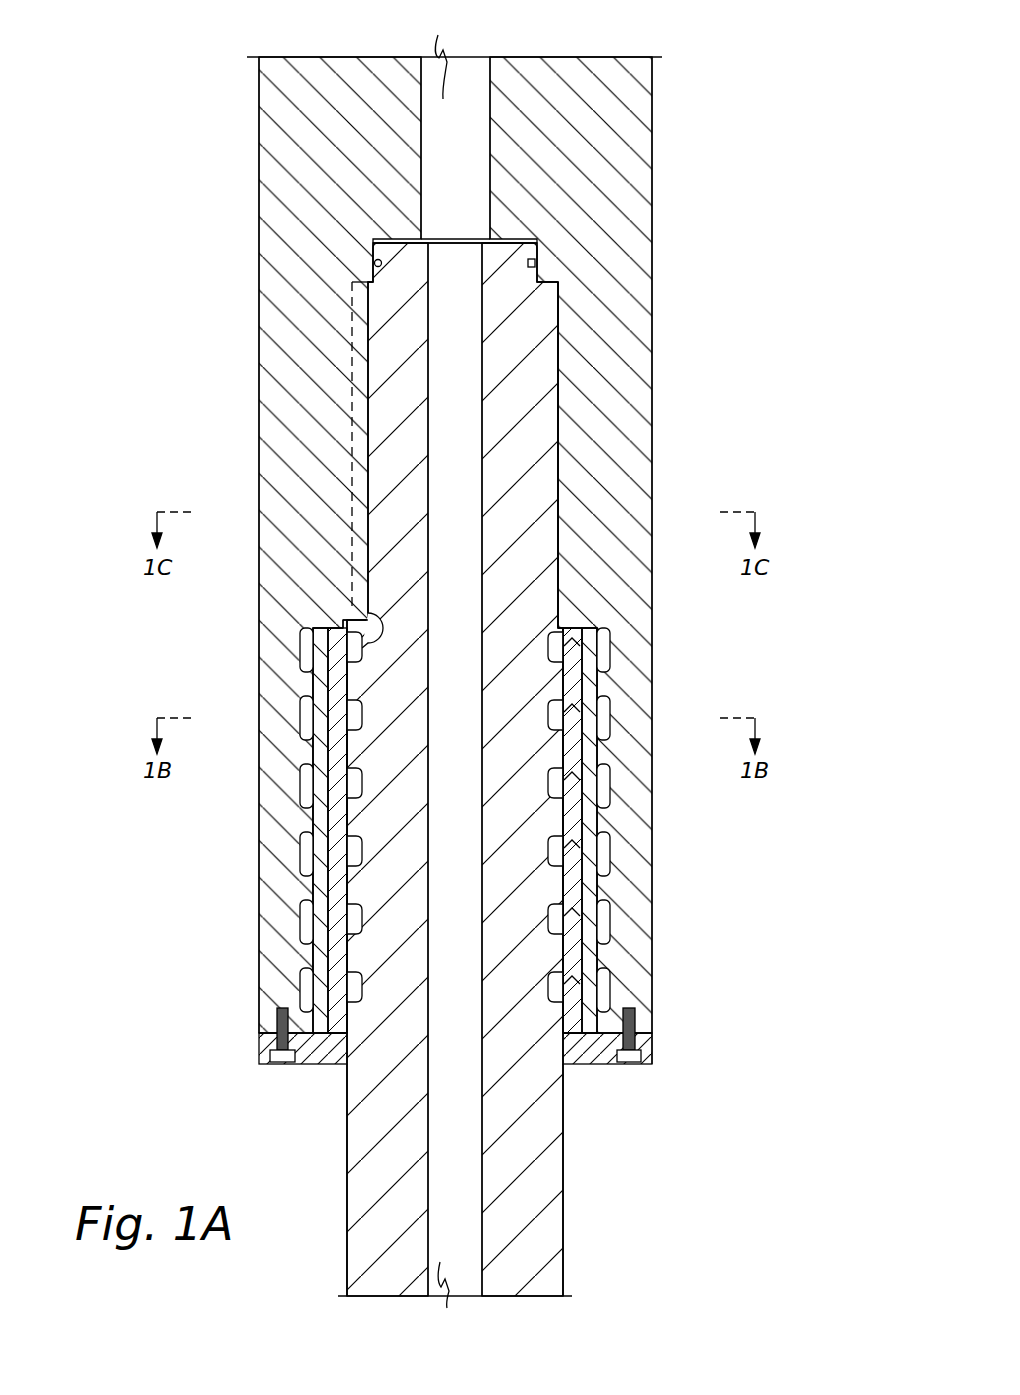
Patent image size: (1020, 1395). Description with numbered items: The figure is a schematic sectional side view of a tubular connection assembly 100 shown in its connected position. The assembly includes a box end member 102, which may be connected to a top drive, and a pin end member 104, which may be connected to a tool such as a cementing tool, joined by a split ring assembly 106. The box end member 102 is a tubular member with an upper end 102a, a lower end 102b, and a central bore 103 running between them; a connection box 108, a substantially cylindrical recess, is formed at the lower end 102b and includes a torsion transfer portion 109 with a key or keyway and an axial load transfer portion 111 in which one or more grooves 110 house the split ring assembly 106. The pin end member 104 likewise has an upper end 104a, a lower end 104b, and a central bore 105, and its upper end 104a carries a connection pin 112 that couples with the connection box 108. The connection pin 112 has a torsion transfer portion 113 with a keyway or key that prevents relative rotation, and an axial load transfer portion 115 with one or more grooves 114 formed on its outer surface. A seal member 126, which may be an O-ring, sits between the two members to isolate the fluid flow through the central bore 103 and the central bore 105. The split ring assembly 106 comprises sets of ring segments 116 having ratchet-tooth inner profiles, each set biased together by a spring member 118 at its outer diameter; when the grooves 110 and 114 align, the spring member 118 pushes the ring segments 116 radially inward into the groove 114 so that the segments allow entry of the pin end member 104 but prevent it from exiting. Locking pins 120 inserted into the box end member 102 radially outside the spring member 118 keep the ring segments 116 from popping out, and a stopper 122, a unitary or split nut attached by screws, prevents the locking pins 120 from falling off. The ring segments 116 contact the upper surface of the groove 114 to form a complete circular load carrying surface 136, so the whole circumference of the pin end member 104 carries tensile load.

The tubular connection assembly 100 is at (748, 92).
The box end member 102 is at (293, 157).
The upper end of box end member 102a is at (293, 83).
The lower end of box end member 102b is at (285, 990).
The central bore of box end member 103 is at (444, 53).
The pin end member 104 is at (540, 376).
The upper end of pin end member 104a is at (540, 315).
The lower end of pin end member 104b is at (540, 1243).
The central bore of pin end member 105 is at (444, 1306).
The split ring assembly 106 is at (562, 650).
The connection box 108 is at (558, 430).
The torsion transfer portion of connection box 109 is at (365, 327).
The grooves of box end member 110 is at (315, 858).
The axial load transfer portion of connection box 111 is at (305, 822).
The connection pin 112 is at (537, 493).
The torsion transfer portion of connection pin 113 is at (350, 393).
The grooves of pin end member 114 is at (365, 628).
The axial load transfer portion of connection pin 115 is at (540, 893).
The ring segments 116 is at (338, 922).
The spring member 118 is at (575, 922).
The locking pins 120 is at (322, 890).
The stopper 122 is at (600, 1068).
The seal member 126 is at (372, 263).
The load carrying surface 136 is at (565, 778).